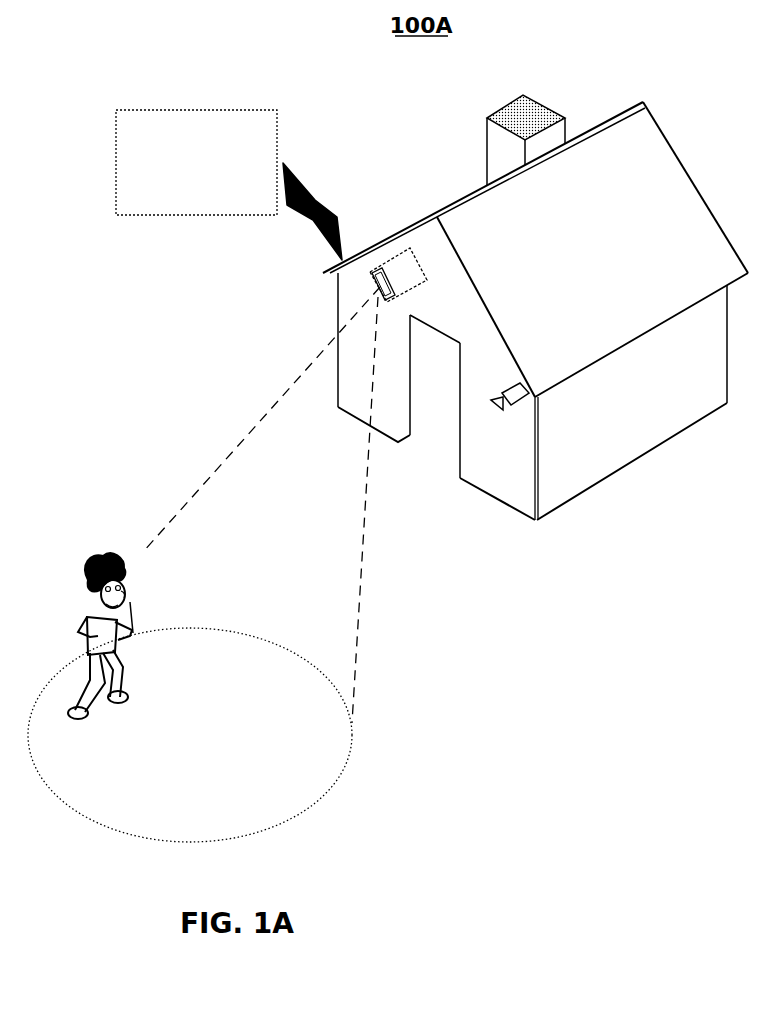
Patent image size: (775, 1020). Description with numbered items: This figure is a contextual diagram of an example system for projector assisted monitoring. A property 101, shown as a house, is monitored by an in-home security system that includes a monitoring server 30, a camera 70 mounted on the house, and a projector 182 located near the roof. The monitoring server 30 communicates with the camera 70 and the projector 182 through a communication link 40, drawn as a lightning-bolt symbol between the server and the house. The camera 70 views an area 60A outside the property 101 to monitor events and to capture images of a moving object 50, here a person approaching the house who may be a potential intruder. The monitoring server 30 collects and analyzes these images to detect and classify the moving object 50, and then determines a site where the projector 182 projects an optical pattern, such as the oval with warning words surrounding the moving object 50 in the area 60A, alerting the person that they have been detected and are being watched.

The monitoring server 30 is at (232, 128).
The communication link 40 is at (306, 173).
The property 101 is at (678, 198).
The projector 182 is at (412, 265).
The camera 70 is at (513, 395).
The moving object 50 is at (103, 552).
The area 60A is at (322, 782).